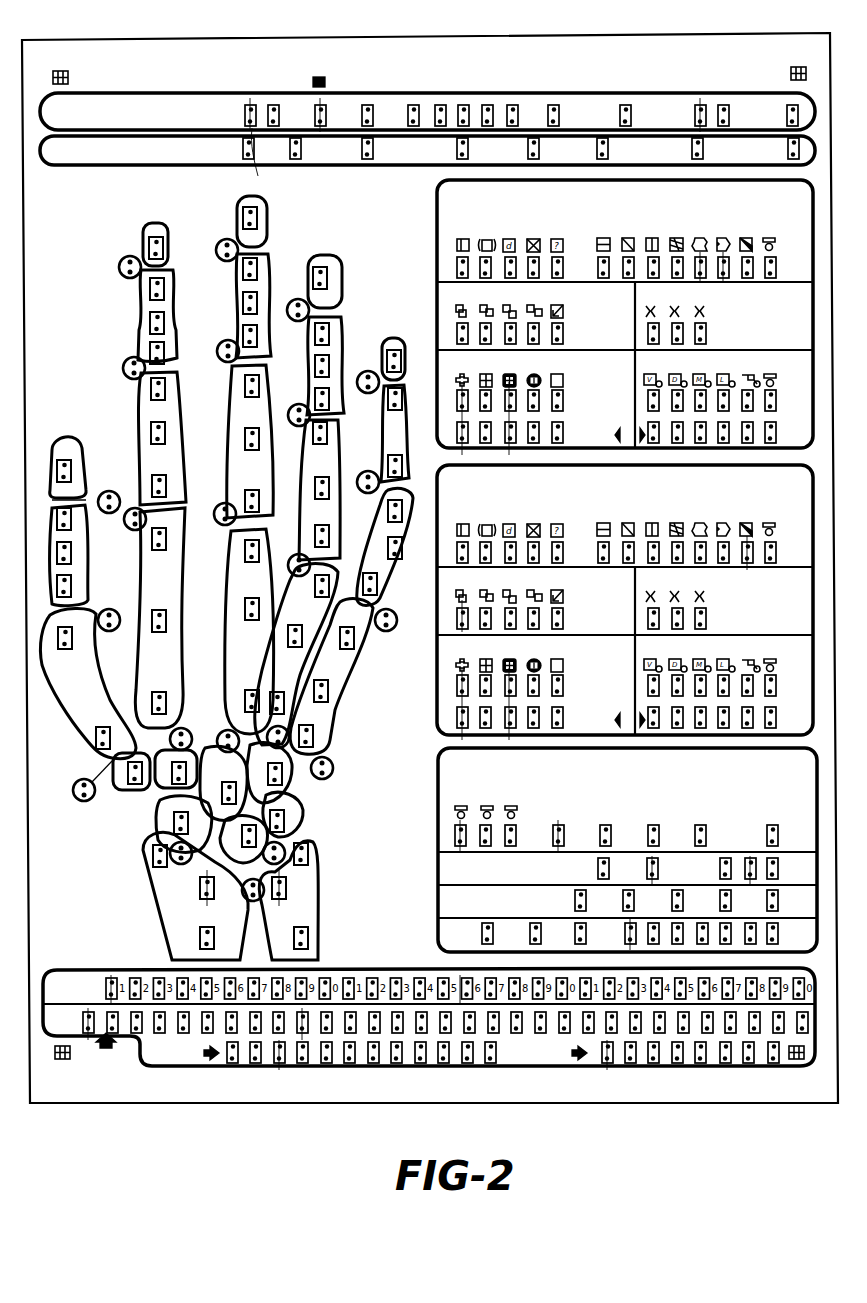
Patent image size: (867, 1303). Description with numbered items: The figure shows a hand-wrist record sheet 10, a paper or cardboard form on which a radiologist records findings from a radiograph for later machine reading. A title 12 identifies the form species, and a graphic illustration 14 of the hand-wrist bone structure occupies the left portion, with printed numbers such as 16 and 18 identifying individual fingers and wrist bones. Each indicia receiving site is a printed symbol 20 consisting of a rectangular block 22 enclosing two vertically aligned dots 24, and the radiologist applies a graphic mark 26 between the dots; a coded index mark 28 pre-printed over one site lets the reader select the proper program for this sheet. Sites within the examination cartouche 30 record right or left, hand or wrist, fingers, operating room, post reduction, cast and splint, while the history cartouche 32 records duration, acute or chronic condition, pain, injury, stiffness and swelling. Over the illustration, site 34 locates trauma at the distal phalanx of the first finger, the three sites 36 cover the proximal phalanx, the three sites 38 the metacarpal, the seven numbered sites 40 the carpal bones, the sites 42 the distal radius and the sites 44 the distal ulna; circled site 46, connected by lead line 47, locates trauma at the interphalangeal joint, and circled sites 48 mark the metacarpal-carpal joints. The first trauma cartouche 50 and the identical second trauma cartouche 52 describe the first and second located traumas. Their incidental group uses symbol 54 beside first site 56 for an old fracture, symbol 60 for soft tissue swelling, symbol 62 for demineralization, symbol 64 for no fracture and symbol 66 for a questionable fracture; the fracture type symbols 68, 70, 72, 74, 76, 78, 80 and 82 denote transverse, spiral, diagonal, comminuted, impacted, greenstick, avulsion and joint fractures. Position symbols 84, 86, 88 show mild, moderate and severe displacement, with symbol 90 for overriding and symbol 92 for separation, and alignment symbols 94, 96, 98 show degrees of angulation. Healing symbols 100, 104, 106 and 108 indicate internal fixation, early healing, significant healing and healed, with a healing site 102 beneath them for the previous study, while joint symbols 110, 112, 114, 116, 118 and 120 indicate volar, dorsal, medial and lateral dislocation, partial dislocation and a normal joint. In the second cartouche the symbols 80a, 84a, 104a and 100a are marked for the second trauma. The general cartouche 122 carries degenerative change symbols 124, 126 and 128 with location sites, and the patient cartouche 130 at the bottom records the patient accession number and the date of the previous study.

The record sheet 10 is at (378, 204).
The title 12 is at (207, 54).
The graphic illustration 14 is at (141, 241).
The printed number 16 is at (63, 421).
The printed number 18 is at (117, 777).
The printed symbol 20 is at (246, 108).
The rectangular block 22 is at (243, 118).
The printed dots 24 is at (256, 160).
The graphic mark 26 is at (252, 110).
The coded index mark 28 is at (314, 78).
The examination cartouche 30 is at (427, 126).
The history cartouche 32 is at (106, 168).
The distal phalanx site 34 is at (71, 462).
The proximal phalanx sites 36 is at (70, 588).
The metacarpal sites 38 is at (95, 738).
The carpal bone sites 40 is at (178, 822).
The distal radius sites 42 is at (203, 936).
The distal ulna sites 44 is at (302, 931).
The joint site circle 46 is at (113, 497).
The lead line 47 is at (88, 500).
The metacarpal-carpal joint sites 48 is at (193, 712).
The trauma 1 cartouche 50 is at (432, 267).
The trauma 2 cartouche 52 is at (431, 651).
The old fracture symbol 54 is at (457, 244).
The first incidental site 56 is at (457, 270).
The soft tissue swelling symbol 60 is at (441, 211).
The demineralization symbol 62 is at (490, 239).
The no fracture symbol 64 is at (512, 239).
The questionable fracture symbol 66 is at (536, 239).
The transverse fracture symbol 68 is at (605, 238).
The spiral fracture symbol 70 is at (628, 238).
The diagonal fracture symbol 72 is at (652, 238).
The comminuted fracture symbol 74 is at (677, 238).
The impacted fracture symbol 76 is at (701, 238).
The greenstick fracture symbol 78 is at (725, 238).
The avulsion fracture symbol 80 is at (747, 238).
The avulsion fracture symbol 80a is at (744, 524).
The joint fracture symbol 82 is at (770, 237).
The mild displacement symbol 84 is at (460, 309).
The mild displacement symbol 84a is at (458, 600).
The moderate displacement symbol 86 is at (487, 311).
The severe displacement symbol 88 is at (486, 320).
The overriding displacement symbol 90 is at (535, 311).
The separation symbol 92 is at (563, 317).
The mild angulation symbol 94 is at (648, 313).
The moderate angulation symbol 96 is at (678, 309).
The severe angulation symbol 98 is at (702, 312).
The internal fixation symbol 100 is at (456, 382).
The internal fixation symbol 100a is at (457, 678).
The healing cell 102 is at (486, 392).
The early healing symbol 104 is at (510, 380).
The early healing symbol 104a is at (511, 665).
The significant healing symbol 106 is at (537, 380).
The healed symbol 108 is at (564, 381).
The volar dislocation symbol 110 is at (648, 383).
The dorsal dislocation symbol 112 is at (676, 377).
The medial dislocation symbol 114 is at (701, 377).
The lateral dislocation symbol 116 is at (727, 377).
The partial dislocation symbol 118 is at (753, 377).
The normal joint symbol 120 is at (777, 380).
The general cartouche 122 is at (434, 752).
The mild degenerative change symbol 124 is at (455, 812).
The moderate degenerative change symbol 126 is at (486, 812).
The severe degenerative change symbol 128 is at (514, 812).
The patient cartouche 130 is at (103, 967).